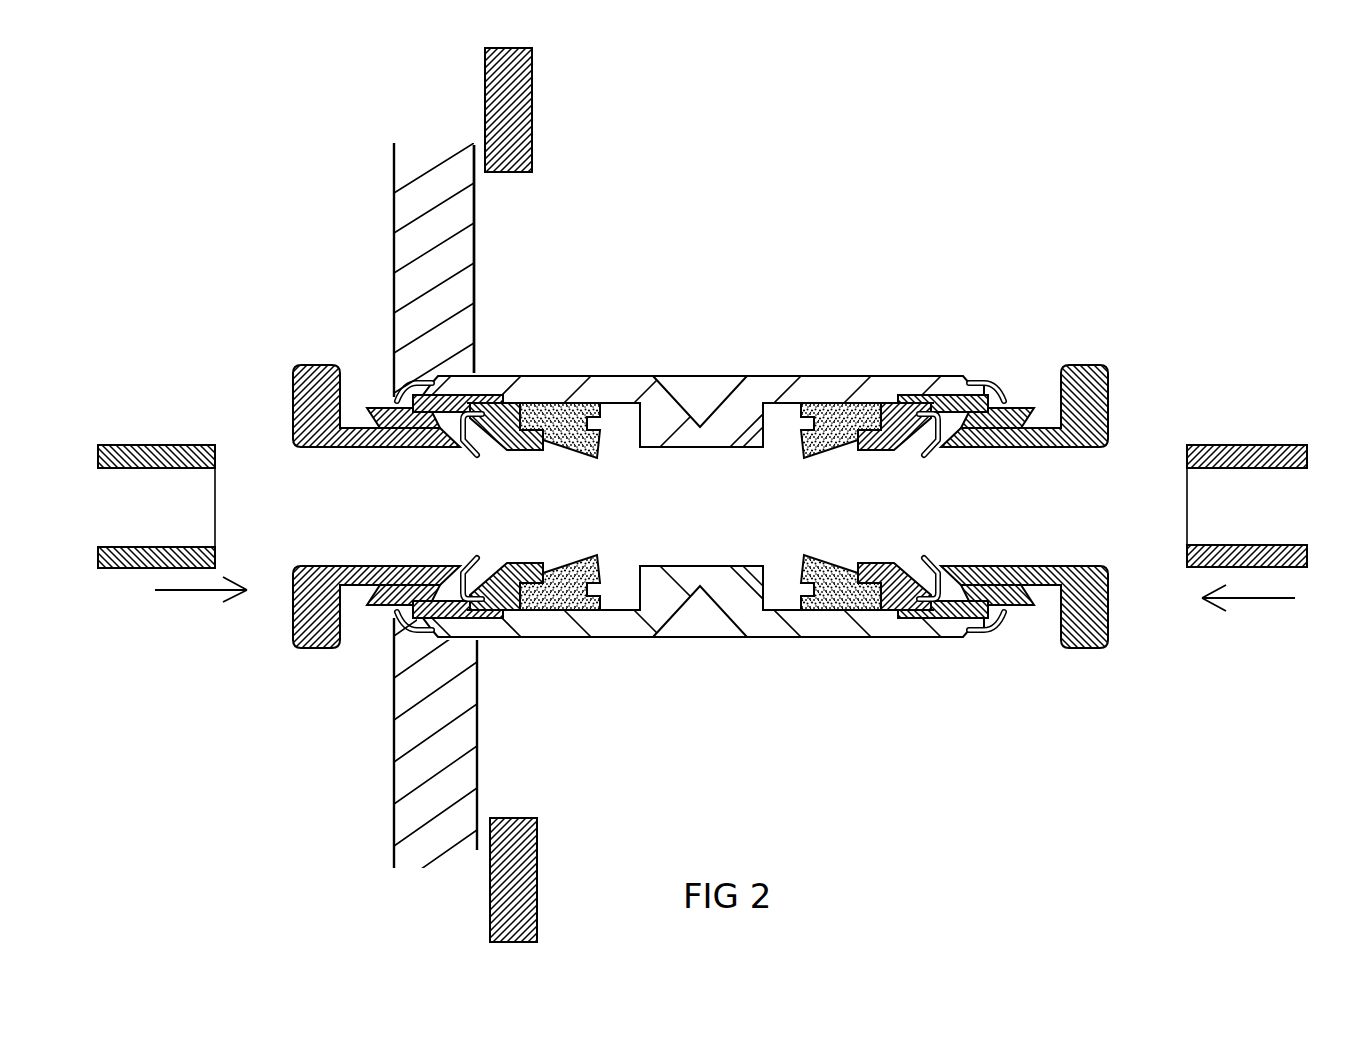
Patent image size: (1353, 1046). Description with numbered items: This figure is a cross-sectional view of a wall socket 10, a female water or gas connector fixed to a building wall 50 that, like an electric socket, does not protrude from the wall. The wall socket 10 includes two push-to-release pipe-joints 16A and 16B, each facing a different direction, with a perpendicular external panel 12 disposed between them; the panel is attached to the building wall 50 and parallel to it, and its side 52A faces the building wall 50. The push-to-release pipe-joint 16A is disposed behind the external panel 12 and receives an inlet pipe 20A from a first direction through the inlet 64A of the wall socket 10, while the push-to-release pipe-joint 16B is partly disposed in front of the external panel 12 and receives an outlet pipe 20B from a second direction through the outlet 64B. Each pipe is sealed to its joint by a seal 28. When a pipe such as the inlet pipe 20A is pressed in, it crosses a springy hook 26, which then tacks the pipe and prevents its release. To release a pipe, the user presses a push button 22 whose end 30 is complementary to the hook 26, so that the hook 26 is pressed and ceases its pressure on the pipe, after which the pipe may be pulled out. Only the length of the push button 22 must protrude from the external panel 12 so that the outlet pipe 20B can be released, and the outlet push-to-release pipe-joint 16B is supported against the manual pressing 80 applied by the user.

The wall socket 10 is at (783, 190).
The external panel 12 is at (394, 222).
The push-to-release pipe-joint 16A is at (1033, 259).
The push-to-release pipe-joint 16B is at (333, 270).
The inlet pipe 20A is at (1235, 495).
The outlet pipe 20B is at (146, 483).
The push button 22 is at (293, 386).
The springy hook 26 is at (462, 453).
The seal 28 is at (558, 452).
The end of the push button 30 is at (952, 612).
The building wall 50 is at (485, 103).
The side of the external panel 52A is at (485, 314).
The inlet of the wall socket 64A is at (1103, 508).
The outlet of the wall socket 64B is at (248, 508).
The manual pressing 80 is at (190, 594).